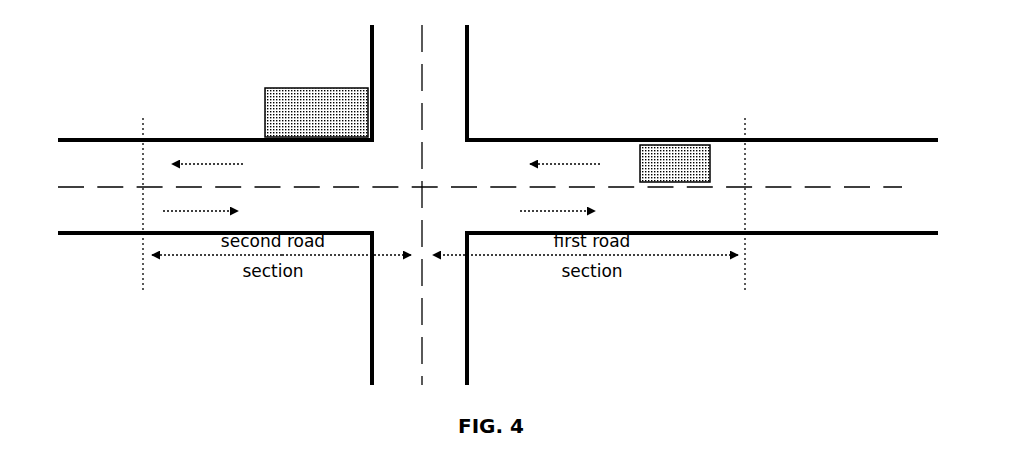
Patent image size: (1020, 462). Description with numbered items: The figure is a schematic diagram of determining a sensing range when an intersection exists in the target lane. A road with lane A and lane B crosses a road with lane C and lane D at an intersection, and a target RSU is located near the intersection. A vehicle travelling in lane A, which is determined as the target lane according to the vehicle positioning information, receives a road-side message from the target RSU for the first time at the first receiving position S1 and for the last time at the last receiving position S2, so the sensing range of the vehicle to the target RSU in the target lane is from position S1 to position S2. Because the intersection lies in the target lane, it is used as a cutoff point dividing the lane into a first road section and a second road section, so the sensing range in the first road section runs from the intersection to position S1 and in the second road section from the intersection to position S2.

The lane A is at (834, 158).
The lane B is at (828, 216).
The lane C is at (388, 63).
The lane D is at (453, 63).
The first receiving position S1 is at (737, 228).
The last receiving position S2 is at (147, 231).
The target RSU is at (316, 112).
The element vehicle is at (675, 163).